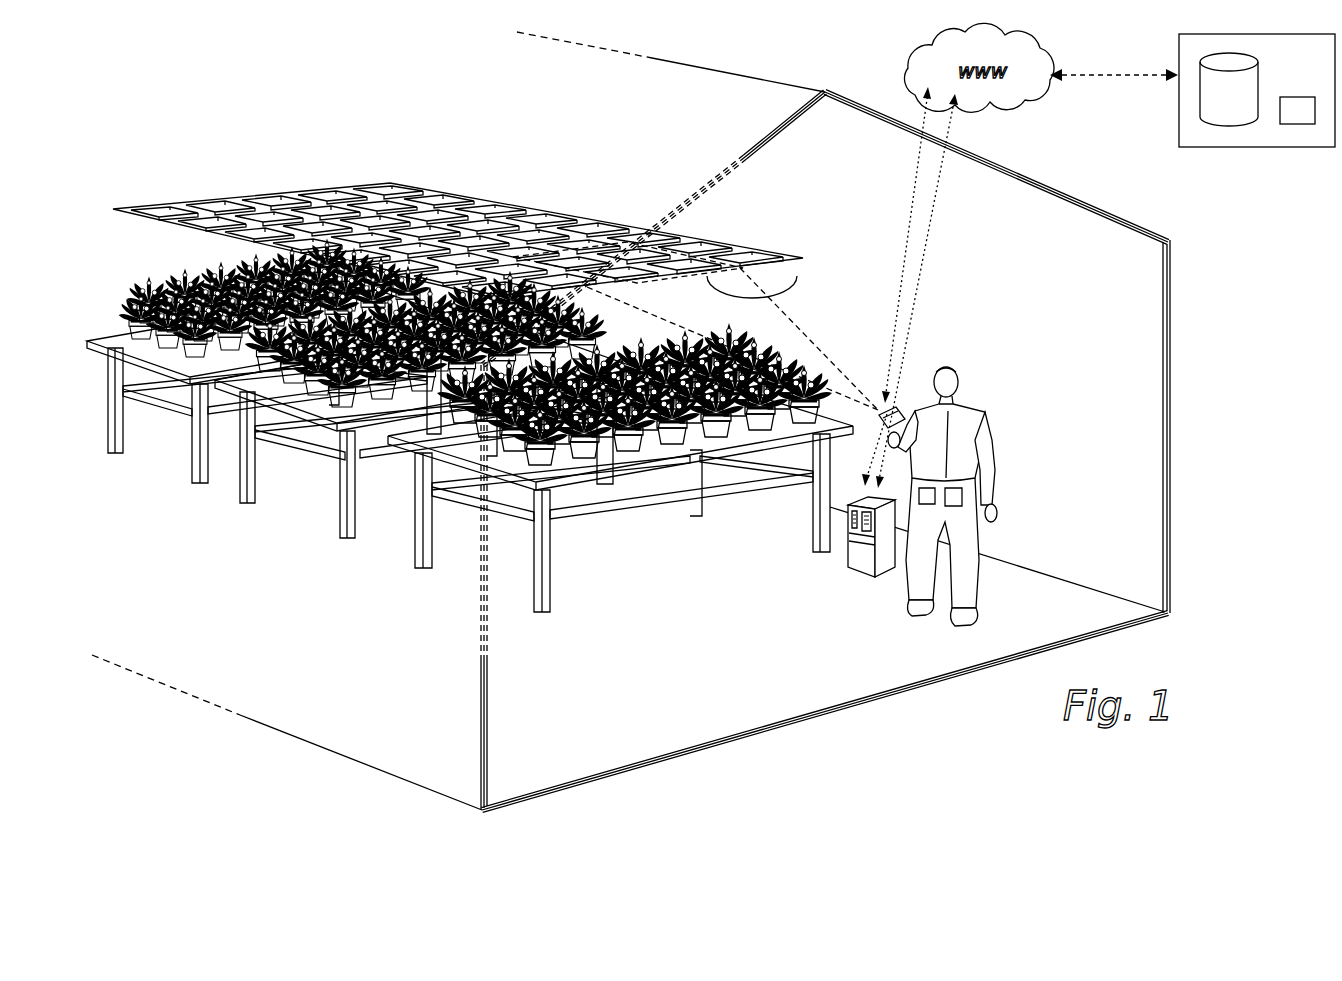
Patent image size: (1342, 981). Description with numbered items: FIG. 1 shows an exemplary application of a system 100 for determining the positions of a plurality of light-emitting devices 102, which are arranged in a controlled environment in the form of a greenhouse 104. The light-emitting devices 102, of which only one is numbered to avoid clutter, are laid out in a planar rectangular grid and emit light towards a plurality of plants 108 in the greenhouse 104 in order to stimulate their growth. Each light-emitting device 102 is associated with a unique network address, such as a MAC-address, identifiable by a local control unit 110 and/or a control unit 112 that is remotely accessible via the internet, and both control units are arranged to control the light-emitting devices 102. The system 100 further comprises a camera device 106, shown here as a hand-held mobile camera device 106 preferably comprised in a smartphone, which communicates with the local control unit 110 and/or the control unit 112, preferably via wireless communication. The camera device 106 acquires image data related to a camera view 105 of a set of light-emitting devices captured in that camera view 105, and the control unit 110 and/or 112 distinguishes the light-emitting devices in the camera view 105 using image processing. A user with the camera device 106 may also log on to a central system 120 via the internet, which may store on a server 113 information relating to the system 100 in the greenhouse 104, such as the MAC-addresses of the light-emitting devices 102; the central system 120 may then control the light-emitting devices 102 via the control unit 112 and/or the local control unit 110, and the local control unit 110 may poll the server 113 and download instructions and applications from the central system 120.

The system 100 is at (975, 245).
The light-emitting device 102 is at (490, 207).
The greenhouse 104 is at (1083, 205).
The camera view 105 is at (797, 276).
The camera device 106 is at (893, 410).
The plant 108 is at (598, 465).
The local control unit 110 is at (864, 562).
The control unit 112 is at (1258, 147).
The server 113 is at (1212, 134).
The central system 120 is at (1280, 118).